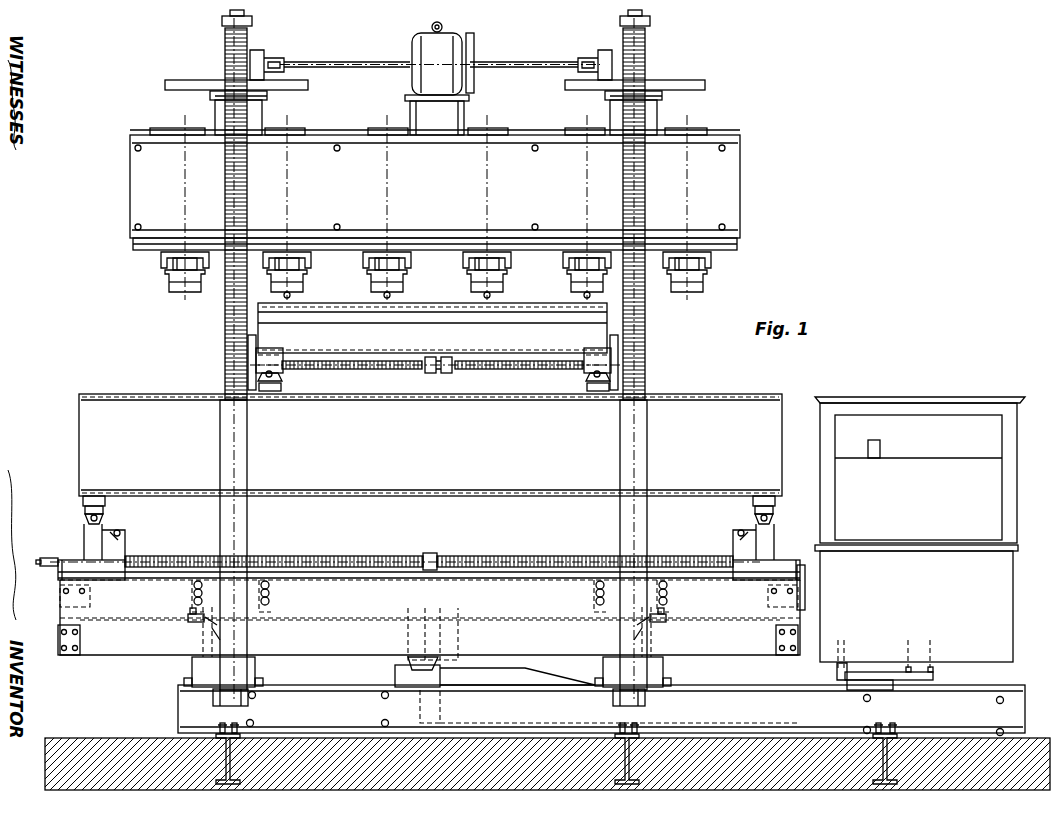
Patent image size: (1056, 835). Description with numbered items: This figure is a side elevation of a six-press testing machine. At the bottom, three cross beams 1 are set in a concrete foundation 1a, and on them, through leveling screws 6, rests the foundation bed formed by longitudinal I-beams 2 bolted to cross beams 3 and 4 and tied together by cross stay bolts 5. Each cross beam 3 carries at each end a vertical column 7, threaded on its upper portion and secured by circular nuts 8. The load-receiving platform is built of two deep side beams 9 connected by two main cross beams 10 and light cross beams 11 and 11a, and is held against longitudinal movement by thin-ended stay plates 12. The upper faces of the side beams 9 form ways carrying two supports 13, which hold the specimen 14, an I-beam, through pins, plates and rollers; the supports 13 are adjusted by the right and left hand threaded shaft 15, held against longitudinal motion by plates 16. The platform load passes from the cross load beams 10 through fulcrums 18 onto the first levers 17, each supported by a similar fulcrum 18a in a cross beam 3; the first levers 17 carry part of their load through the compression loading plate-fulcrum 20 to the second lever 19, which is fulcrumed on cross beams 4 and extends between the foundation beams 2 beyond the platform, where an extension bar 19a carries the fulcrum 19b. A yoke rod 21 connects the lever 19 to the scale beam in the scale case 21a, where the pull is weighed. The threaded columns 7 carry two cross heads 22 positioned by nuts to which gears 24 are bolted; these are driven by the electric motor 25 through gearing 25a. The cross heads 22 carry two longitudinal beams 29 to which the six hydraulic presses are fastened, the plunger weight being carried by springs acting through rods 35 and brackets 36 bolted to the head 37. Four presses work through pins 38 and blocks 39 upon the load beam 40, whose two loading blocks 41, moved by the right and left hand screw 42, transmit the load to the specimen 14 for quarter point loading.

The cross beams 1 is at (230, 770).
The concrete foundation 1a is at (547, 764).
The longitudinal I-beams 2 is at (601, 709).
The cross beams 3 is at (427, 672).
The cross beams 4 is at (394, 670).
The cross stay bolts 5 is at (262, 704).
The leveling screws 6 is at (636, 724).
The vertical column 7 is at (247, 530).
The circular nuts 8 is at (213, 703).
The side beams 9 is at (430, 617).
The main cross beams 10 is at (270, 592).
The light cross beams 11 is at (80, 640).
The light cross beams 11a is at (88, 590).
The stay plates 12 is at (122, 620).
The supports 13 is at (418, 538).
The specimen 14 is at (430, 445).
The shaft 15 is at (352, 558).
The plates 16 is at (44, 565).
The first levers 17 is at (430, 632).
The fulcrums 18 is at (230, 626).
The fulcrum 18a is at (196, 622).
The second lever 19 is at (610, 694).
The extension bar 19a is at (934, 676).
The fulcrum 19b is at (836, 672).
The compression loading plate-fulcrum 20 is at (436, 664).
The yoke rod 21 is at (844, 642).
The cabinet 21a is at (920, 529).
The cross heads 22 is at (436, 113).
The gears 24 is at (175, 80).
The electric motor 25 is at (439, 78).
The gearing 25a is at (260, 58).
The longitudinal beams 29 is at (742, 205).
The rods 35 is at (163, 258).
The brackets 36 is at (165, 275).
The head 37 is at (714, 286).
The pins 38 is at (291, 295).
The blocks 39 is at (573, 296).
The load beam 40 is at (433, 346).
The loading blocks 41 is at (278, 374).
The right and left hand screw 42 is at (402, 369).